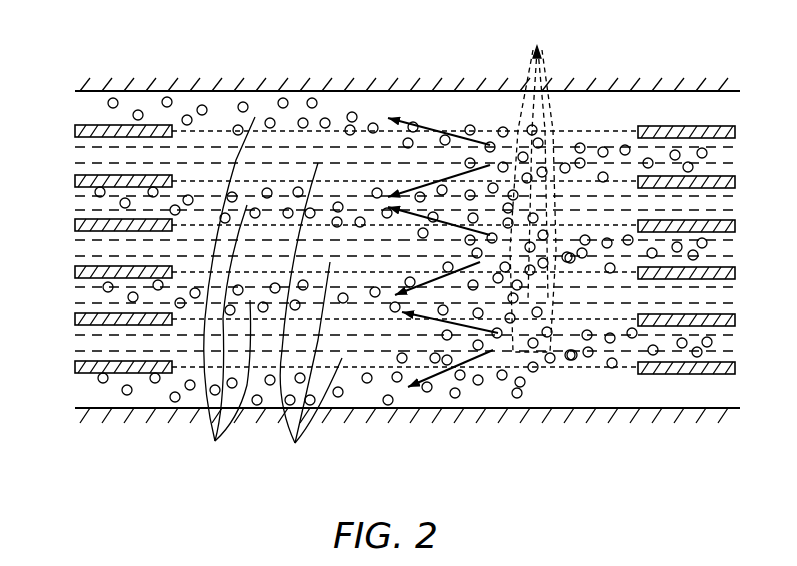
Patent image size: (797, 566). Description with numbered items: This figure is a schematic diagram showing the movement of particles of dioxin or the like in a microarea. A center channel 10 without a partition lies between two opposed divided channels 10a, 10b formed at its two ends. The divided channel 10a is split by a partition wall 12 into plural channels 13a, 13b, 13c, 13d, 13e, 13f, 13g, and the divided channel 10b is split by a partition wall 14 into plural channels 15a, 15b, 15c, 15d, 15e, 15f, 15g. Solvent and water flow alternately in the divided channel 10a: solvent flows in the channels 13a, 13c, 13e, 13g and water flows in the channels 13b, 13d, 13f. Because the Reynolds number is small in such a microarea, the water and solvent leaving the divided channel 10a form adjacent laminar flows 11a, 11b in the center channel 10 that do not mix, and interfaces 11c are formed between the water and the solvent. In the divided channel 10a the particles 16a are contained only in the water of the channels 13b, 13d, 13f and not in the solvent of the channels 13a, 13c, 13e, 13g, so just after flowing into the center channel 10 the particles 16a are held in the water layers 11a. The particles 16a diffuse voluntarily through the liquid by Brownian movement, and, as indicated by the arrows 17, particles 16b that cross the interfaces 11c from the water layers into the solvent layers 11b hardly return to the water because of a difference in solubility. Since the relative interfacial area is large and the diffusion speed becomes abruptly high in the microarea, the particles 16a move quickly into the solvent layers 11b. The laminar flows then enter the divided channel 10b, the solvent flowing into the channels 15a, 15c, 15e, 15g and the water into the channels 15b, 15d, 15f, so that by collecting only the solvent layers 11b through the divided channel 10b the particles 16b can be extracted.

The center channel 10 is at (385, 88).
The divided channel 10a is at (701, 88).
The divided channel 10b is at (115, 89).
The laminar flow 11a is at (311, 318).
The laminar flow 11b is at (226, 295).
The interface 11c is at (538, 188).
The partition wall 12 is at (688, 376).
The channel 13a is at (722, 112).
The channel 13b is at (722, 160).
The channel 13c is at (722, 205).
The channel 13d is at (722, 252).
The channel 13e is at (722, 297).
The channel 13f is at (722, 345).
The channel 13g is at (722, 392).
The partition wall 14 is at (117, 375).
The channel 15a is at (88, 108).
The channel 15b is at (88, 153).
The channel 15c is at (88, 197).
The channel 15d is at (88, 243).
The channel 15e is at (88, 296).
The channel 15f is at (88, 340).
The channel 15g is at (88, 385).
The particles 16a is at (583, 142).
The particles 16b is at (283, 97).
The arrows 17 is at (433, 133).